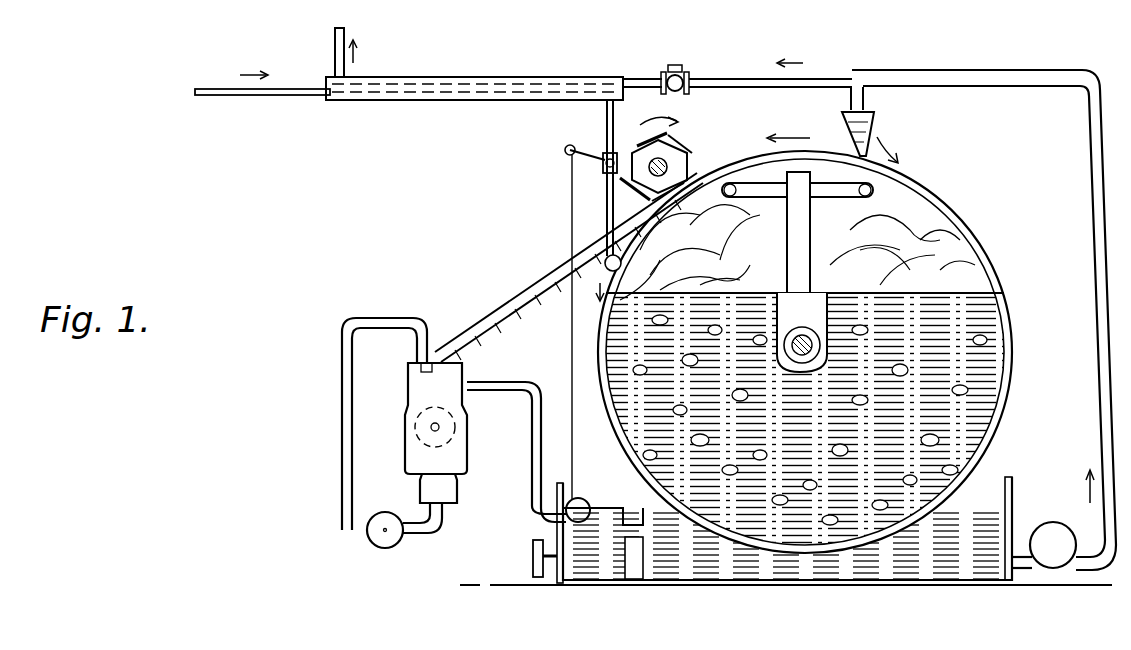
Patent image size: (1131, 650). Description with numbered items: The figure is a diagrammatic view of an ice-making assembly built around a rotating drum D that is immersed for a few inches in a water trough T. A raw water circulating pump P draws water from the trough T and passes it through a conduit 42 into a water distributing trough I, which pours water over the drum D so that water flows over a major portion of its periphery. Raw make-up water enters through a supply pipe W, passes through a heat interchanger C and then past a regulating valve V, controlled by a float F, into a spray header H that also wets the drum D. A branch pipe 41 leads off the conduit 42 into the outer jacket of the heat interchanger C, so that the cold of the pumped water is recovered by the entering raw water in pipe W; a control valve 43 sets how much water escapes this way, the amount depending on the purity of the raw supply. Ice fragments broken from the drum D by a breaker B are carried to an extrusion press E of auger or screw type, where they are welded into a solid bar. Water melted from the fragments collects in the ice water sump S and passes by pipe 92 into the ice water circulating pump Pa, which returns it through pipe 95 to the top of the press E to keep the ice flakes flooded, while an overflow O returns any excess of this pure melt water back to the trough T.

The supply pipe W is at (211, 90).
The heat interchanger C is at (465, 78).
The control valve 43 is at (703, 48).
The branch pipe 41 is at (818, 78).
The water distributing trough I is at (873, 127).
The conduit 42 is at (1093, 146).
The drum D is at (950, 222).
The spray header H is at (590, 263).
The regulating valve V is at (601, 152).
The breaker B is at (675, 152).
The pipe 95 is at (347, 371).
The extrusion press E is at (464, 432).
The ice water sump S is at (443, 490).
The ice water circulating pump Pa is at (383, 546).
The pipe 92 is at (421, 535).
The overflow O is at (535, 461).
The float F is at (586, 504).
The water trough T is at (932, 557).
The raw water circulating pump P is at (1053, 528).